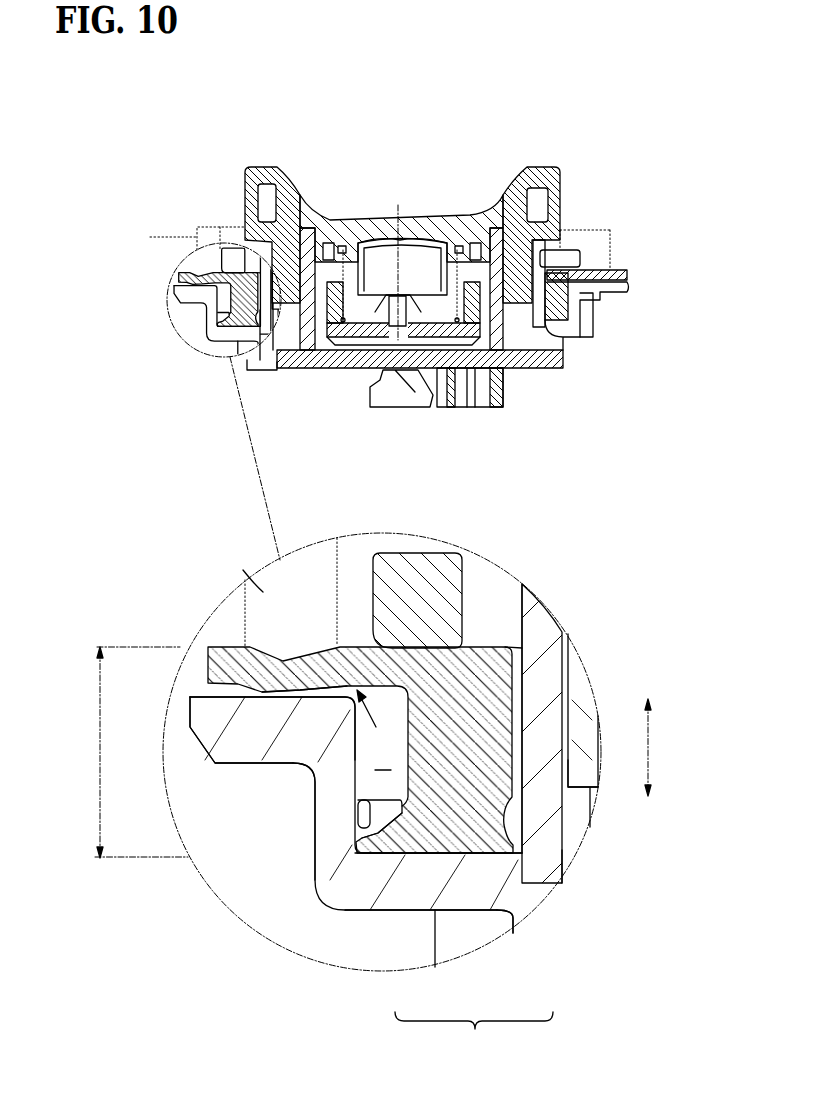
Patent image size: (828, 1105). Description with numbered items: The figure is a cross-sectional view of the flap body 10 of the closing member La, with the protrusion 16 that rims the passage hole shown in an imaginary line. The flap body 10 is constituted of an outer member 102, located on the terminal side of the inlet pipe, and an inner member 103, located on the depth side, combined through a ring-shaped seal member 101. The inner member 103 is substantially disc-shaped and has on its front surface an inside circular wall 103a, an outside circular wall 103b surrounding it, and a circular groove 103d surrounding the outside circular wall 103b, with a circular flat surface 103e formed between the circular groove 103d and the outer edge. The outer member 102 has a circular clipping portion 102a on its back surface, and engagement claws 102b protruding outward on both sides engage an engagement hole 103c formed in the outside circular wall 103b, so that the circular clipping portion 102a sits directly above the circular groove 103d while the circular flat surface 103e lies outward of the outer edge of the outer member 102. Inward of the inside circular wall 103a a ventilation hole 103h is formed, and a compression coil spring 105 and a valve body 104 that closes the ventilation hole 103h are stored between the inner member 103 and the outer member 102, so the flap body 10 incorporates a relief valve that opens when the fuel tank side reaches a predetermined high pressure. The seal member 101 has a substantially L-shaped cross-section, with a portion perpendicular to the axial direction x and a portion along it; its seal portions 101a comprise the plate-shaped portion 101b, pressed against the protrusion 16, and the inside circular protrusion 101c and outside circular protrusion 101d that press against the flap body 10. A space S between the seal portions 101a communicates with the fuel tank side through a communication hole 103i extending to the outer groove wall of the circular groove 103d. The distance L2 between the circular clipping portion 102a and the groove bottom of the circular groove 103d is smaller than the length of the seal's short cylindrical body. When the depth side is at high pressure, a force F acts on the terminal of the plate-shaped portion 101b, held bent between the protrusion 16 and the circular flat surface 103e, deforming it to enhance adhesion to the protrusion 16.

The flap body 10 is at (308, 178).
The closing member La is at (474, 146).
The protrusion 16 is at (265, 562).
The seal member 101 is at (521, 584).
The seal portions 101a is at (306, 742).
The plate-shaped portion 101b is at (234, 854).
The inside circular protrusion 101c is at (497, 912).
The outside circular protrusion 101d is at (400, 908).
The outer member 102 is at (458, 215).
The circular clipping portion 102a is at (399, 553).
The engagement claws 102b is at (247, 213).
The inner member 103 is at (520, 373).
The inside circular wall 103a is at (343, 246).
The outside circular wall 103b is at (562, 237).
The engagement hole 103c is at (197, 237).
The circular groove 103d is at (560, 883).
The circular flat surface 103e is at (288, 692).
The ventilation hole 103h is at (378, 363).
The communication hole 103i is at (355, 845).
The valve body 104 is at (381, 290).
The compression coil spring 105 is at (426, 250).
The distance L2 is at (138, 752).
The force F is at (369, 718).
The space S is at (383, 759).
The axial direction x is at (650, 748).